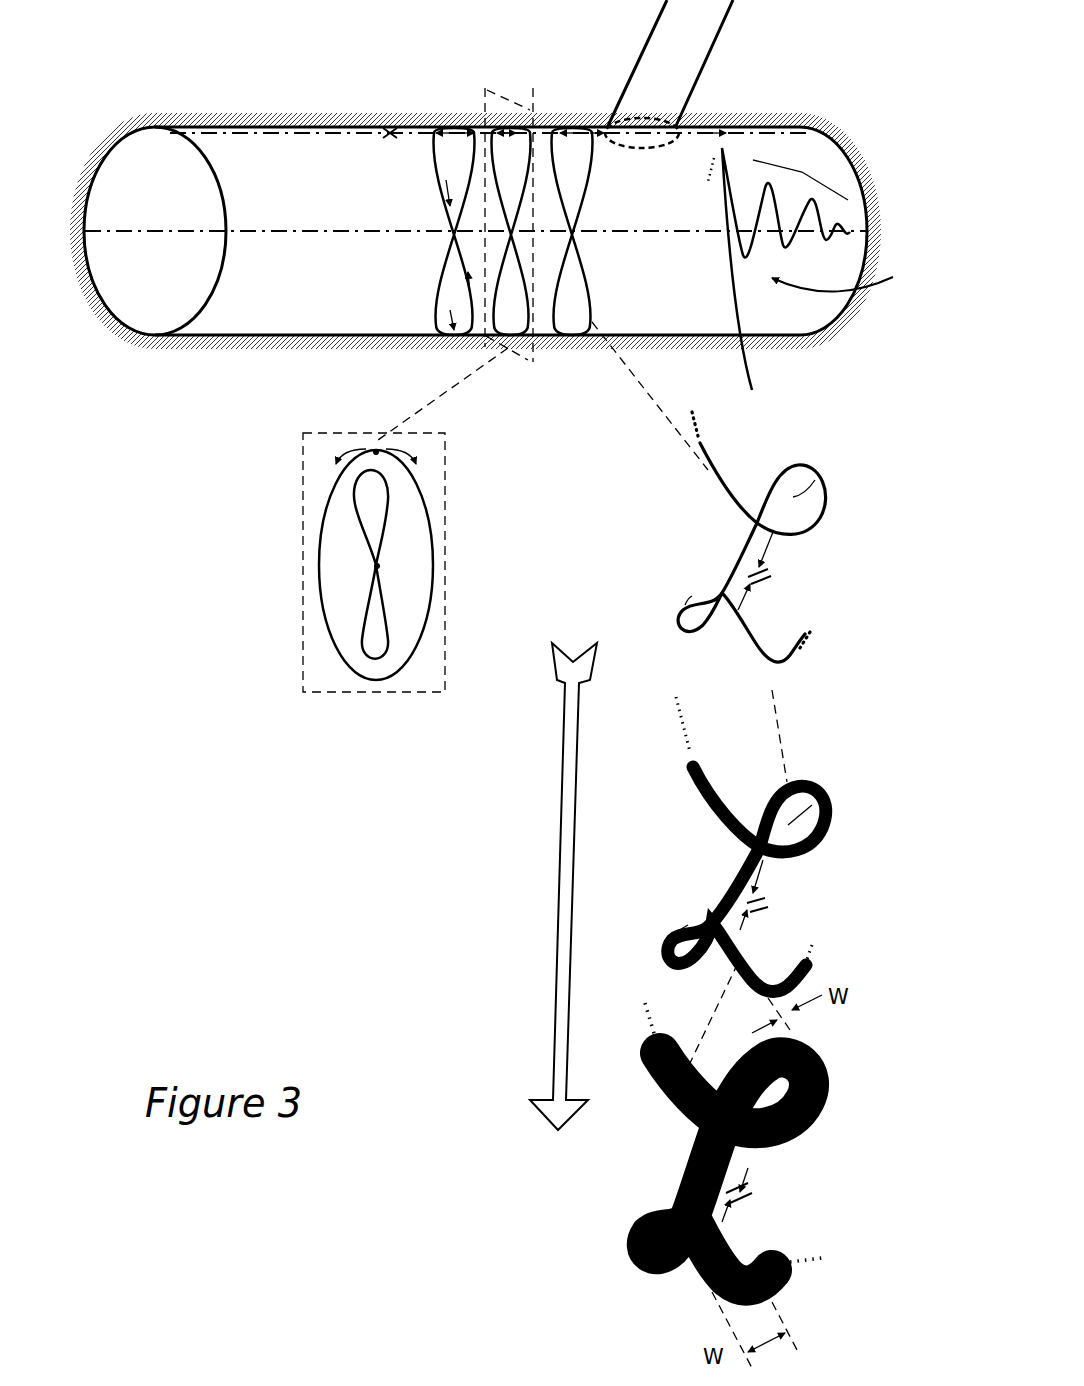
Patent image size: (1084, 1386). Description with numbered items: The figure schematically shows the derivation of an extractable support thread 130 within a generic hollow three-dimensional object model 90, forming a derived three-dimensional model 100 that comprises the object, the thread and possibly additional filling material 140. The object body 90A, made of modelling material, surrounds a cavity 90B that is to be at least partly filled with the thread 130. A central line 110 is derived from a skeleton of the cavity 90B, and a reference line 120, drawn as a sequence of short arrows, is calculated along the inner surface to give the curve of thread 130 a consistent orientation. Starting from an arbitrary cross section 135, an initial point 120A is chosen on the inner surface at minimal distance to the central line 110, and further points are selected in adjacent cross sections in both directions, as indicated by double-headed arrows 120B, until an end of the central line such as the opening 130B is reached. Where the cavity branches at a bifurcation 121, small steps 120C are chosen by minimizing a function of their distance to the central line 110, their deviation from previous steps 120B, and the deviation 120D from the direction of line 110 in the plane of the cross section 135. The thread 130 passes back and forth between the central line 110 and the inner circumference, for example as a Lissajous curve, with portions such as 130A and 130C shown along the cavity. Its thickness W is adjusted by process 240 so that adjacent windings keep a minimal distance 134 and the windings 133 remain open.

The derived 3D model 100 is at (104, 31).
The hollow 3D object model 90 is at (186, 427).
The object body 90A is at (166, 347).
The cavity 90B is at (128, 318).
The central line 110 is at (338, 236).
The reference line 120 is at (744, 132).
The initial point 120A is at (376, 450).
The steps 120B is at (436, 128).
The small steps 120C is at (671, 149).
The deviation 120D is at (320, 456).
The bifurcation 121 is at (606, 123).
The thread 130 is at (570, 328).
The fiber wave portion 130A is at (802, 172).
The opening 130B is at (120, 182).
The fiber exit region 130C is at (907, 222).
The open windings 133 is at (822, 480).
The minimal distance 134 is at (742, 608).
The cross section 135 is at (534, 364).
The filling material 140 is at (856, 270).
The thread thickness adjustment process 240 is at (557, 872).